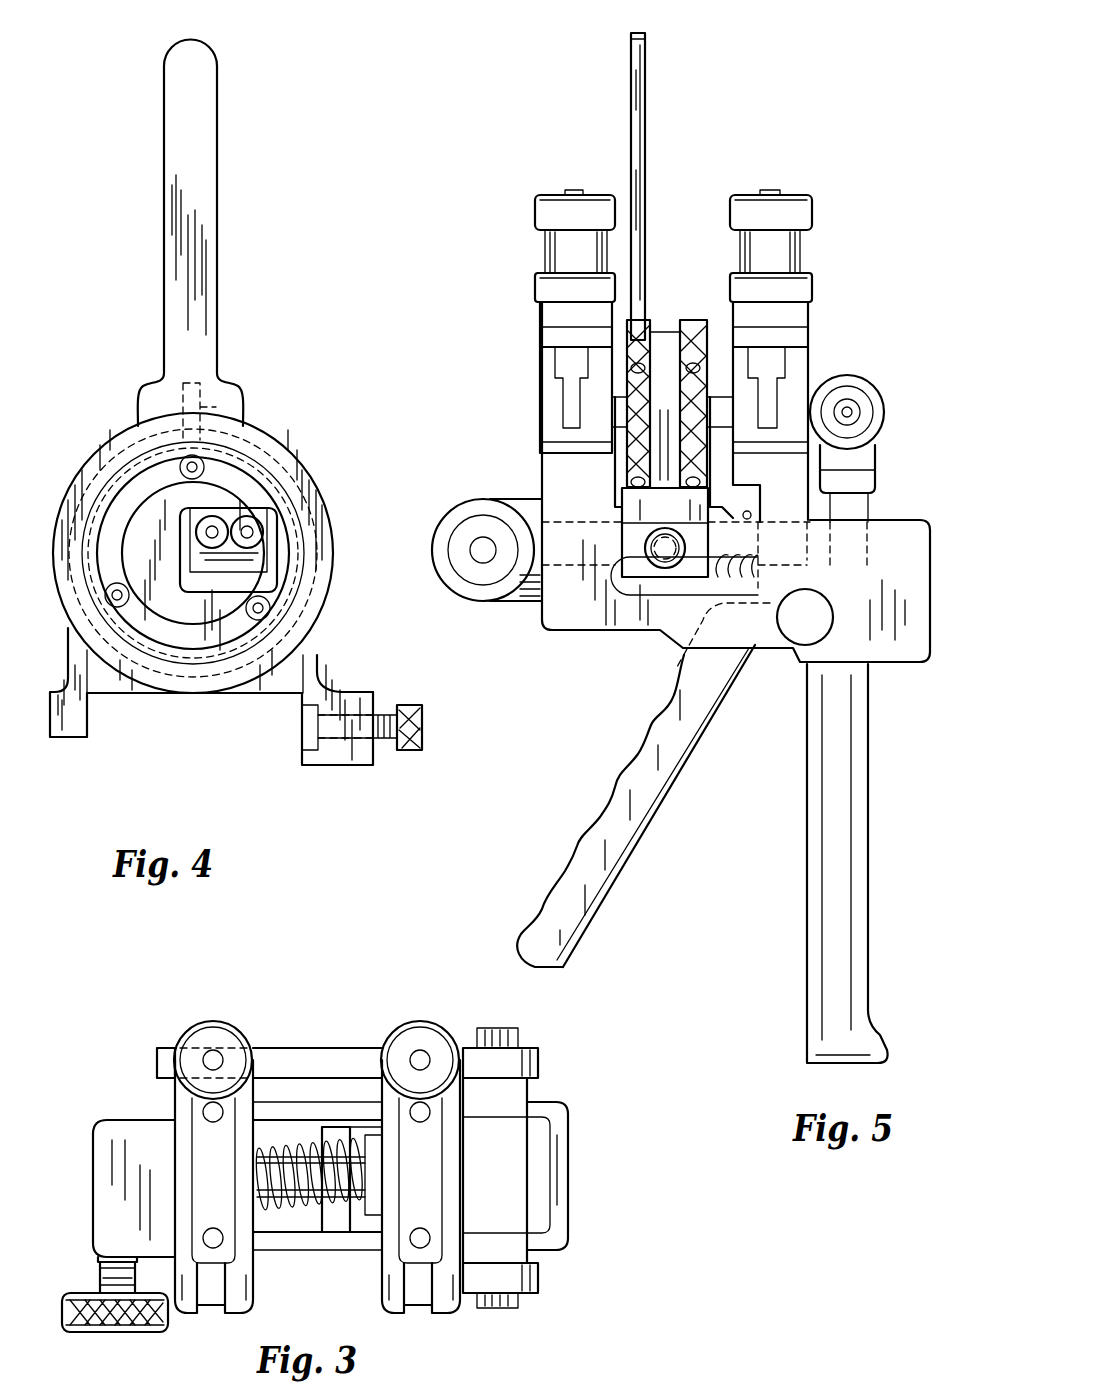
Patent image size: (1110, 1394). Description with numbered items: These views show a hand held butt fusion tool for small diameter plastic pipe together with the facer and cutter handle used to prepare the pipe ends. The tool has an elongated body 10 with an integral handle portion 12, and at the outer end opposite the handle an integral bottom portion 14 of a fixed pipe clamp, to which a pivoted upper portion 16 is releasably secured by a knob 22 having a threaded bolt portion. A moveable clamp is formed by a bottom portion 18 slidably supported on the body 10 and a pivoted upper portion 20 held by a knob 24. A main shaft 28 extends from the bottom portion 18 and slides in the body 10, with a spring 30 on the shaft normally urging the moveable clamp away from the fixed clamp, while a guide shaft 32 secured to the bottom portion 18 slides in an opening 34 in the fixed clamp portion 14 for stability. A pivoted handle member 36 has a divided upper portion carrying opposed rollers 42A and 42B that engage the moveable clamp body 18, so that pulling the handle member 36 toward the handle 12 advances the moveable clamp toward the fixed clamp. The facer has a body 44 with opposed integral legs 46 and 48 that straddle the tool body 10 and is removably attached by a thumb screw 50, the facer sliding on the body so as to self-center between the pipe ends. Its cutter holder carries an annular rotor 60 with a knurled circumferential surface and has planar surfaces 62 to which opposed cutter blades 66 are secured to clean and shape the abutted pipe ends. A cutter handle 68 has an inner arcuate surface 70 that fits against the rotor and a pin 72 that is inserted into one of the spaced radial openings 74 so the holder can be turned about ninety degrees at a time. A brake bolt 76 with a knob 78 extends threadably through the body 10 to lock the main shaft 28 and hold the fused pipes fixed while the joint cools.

In FIG. 5, the body 10 is at (903, 545).
In FIG. 3, the body 10 is at (110, 1135).
In FIG. 5, the handle portion 12 is at (824, 944).
In FIG. 5, the bottom portion of pipe clamp 14 is at (550, 400).
In FIG. 3, the bottom portion of pipe clamp 14 is at (183, 1110).
In FIG. 5, the pivoted upper portion of pipe clamp 16 is at (560, 322).
In FIG. 5, the bottom portion of moveable pipe clamp 18 is at (797, 380).
In FIG. 3, the bottom portion of moveable pipe clamp 18 is at (421, 1186).
In FIG. 5, the pipe clamp upper portion 20 is at (790, 323).
In FIG. 5, the knob 22 is at (563, 212).
In FIG. 3, the knob 22 is at (217, 1038).
In FIG. 5, the knob 24 is at (788, 212).
In FIG. 3, the knob 24 is at (424, 1038).
In FIG. 3, the main shaft 28 is at (263, 1205).
In FIG. 3, the spring 30 is at (323, 1193).
In FIG. 3, the guide shaft 32 is at (318, 1045).
In FIG. 3, the opening 34 is at (157, 1058).
In FIG. 5, the handle member 36 is at (621, 846).
In FIG. 5, the roller 42A is at (852, 400).
In FIG. 3, the roller 42A is at (522, 1280).
In FIG. 5, the roller 42B is at (487, 550).
In FIG. 3, the roller 42B is at (530, 1062).
In FIG. 4, the facer body 44 is at (312, 663).
In FIG. 5, the facer body 44 is at (666, 330).
In FIG. 4, the leg 46 is at (77, 722).
In FIG. 4, the leg 48 is at (332, 755).
In FIG. 4, the thumb screw 50 is at (405, 745).
In FIG. 4, the annular rotor 60 is at (160, 600).
In FIG. 4, the planar surface 62 is at (205, 498).
In FIG. 4, the cutter blade 66 is at (230, 575).
In FIG. 4, the cutter handle 68 is at (178, 136).
In FIG. 5, the cutter handle 68 is at (640, 88).
In FIG. 4, the inner arcuate surface 70 is at (150, 428).
In FIG. 4, the pin 72 is at (222, 426).
In FIG. 5, the radial opening 74 is at (698, 362).
In FIG. 3, the brake bolt 76 is at (98, 1275).
In FIG. 3, the knob 78 is at (138, 1323).